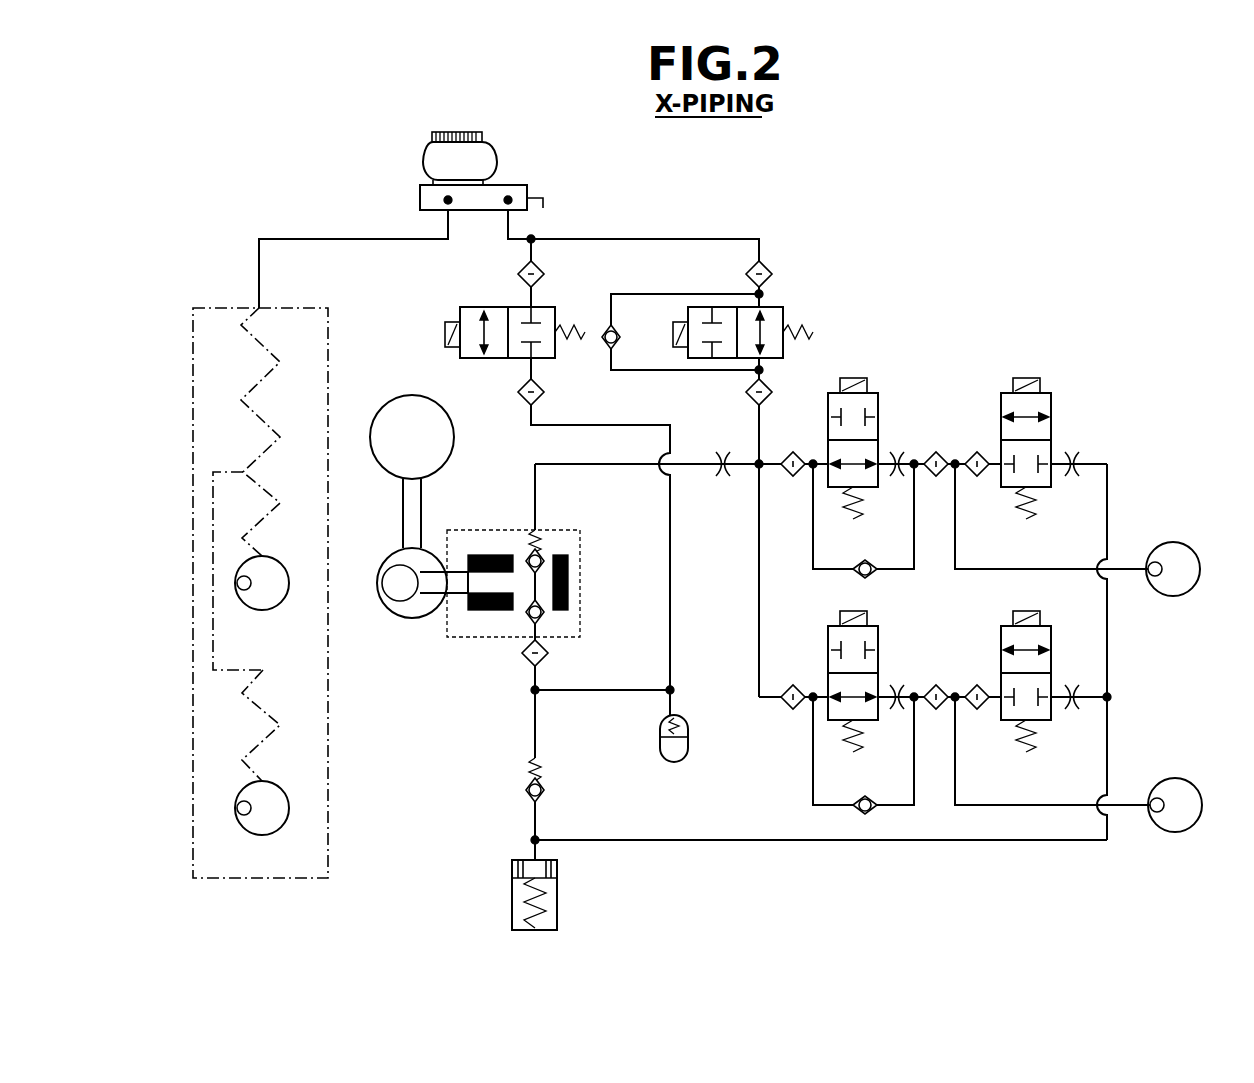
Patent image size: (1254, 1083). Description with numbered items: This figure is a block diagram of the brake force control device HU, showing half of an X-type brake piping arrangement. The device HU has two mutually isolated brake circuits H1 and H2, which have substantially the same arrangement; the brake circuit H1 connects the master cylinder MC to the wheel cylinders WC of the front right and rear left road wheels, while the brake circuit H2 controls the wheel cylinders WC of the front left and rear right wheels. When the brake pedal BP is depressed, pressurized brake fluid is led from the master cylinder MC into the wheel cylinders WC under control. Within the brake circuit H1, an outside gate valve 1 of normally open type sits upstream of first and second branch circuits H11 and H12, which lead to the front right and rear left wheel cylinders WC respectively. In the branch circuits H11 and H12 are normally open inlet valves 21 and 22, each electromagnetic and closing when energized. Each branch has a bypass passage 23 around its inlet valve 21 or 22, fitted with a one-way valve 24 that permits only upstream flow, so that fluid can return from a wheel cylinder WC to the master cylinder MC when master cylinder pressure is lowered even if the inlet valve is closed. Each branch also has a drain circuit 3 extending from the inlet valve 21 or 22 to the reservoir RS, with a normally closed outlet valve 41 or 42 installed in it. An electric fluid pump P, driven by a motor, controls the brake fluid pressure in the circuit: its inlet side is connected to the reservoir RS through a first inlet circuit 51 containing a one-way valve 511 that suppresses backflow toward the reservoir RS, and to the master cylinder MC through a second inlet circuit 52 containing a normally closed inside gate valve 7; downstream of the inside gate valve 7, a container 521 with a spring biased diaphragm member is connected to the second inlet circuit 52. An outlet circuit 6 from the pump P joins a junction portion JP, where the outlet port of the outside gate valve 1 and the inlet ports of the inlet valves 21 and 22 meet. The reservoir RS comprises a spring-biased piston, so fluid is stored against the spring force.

The outside gate valve 1 is at (776, 305).
The drain circuit 3 is at (1108, 472).
The outlet circuit 6 is at (618, 464).
The inside gate valve 7 is at (472, 358).
The inlet valve 21 is at (870, 393).
The inlet valve 22 is at (878, 634).
The bypass passage 23 is at (813, 527).
The one-way valve 24 is at (858, 576).
The outlet valve 41 is at (1042, 393).
The outlet valve 42 is at (1052, 634).
The first inlet circuit 51 is at (533, 718).
The second inlet circuit 52 is at (672, 536).
The one-way valve 511 is at (527, 793).
The container 521 is at (682, 762).
The master cylinder MC is at (510, 188).
The brake pedal BP is at (543, 210).
The brake circuit H1 is at (710, 238).
The brake circuit H2 is at (338, 239).
The first branch circuit H11 is at (770, 462).
The second branch circuit H12 is at (759, 637).
The brake force control device HU is at (995, 271).
The junction portion JP is at (757, 462).
The electric fluid pump P is at (466, 636).
The reservoir RS is at (557, 895).
The wheel cylinder WC is at (716, 693).